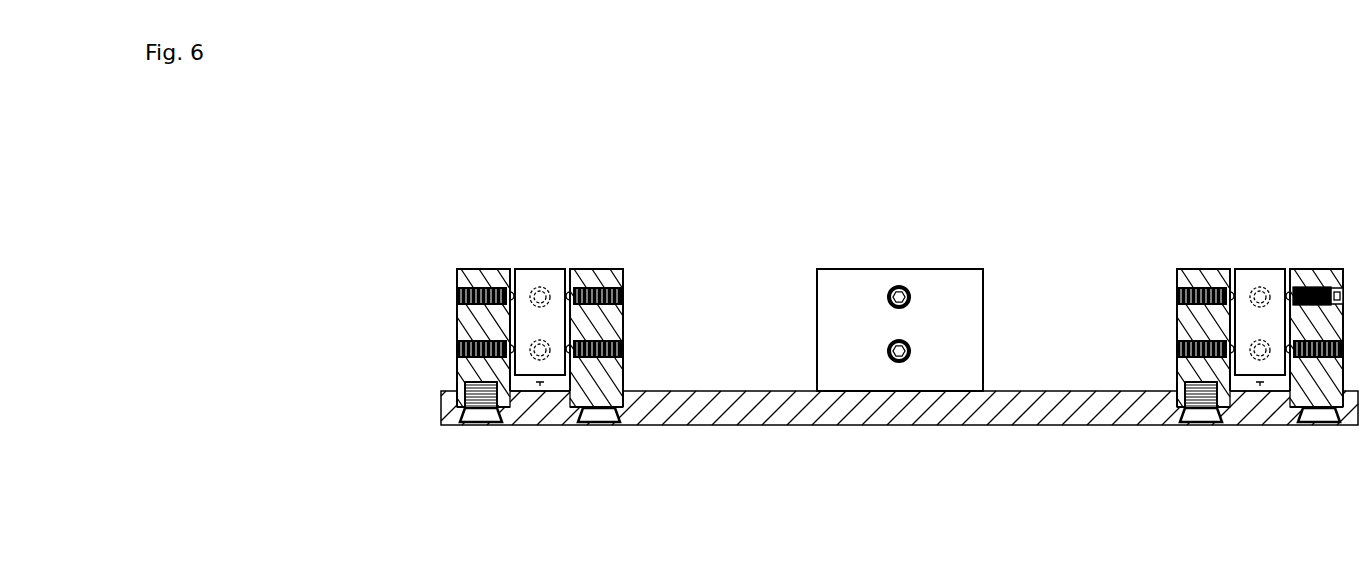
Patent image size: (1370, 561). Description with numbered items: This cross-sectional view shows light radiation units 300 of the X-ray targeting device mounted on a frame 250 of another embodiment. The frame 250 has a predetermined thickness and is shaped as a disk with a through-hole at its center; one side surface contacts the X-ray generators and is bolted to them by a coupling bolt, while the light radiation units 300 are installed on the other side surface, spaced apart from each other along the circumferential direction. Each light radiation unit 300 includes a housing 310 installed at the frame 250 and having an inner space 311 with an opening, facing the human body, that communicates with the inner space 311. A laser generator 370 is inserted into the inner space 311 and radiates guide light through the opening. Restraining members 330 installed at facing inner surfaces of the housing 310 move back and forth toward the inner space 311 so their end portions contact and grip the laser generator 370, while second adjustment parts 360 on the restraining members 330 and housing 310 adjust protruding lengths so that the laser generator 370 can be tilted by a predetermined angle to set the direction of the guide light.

The frame 250 is at (765, 408).
The light radiation unit 300 is at (881, 319).
The housing 310 is at (576, 306).
The inner space 311 is at (542, 386).
The restraining member 330 is at (627, 280).
The second adjustment part 360 is at (622, 335).
The laser generator 370 is at (547, 277).